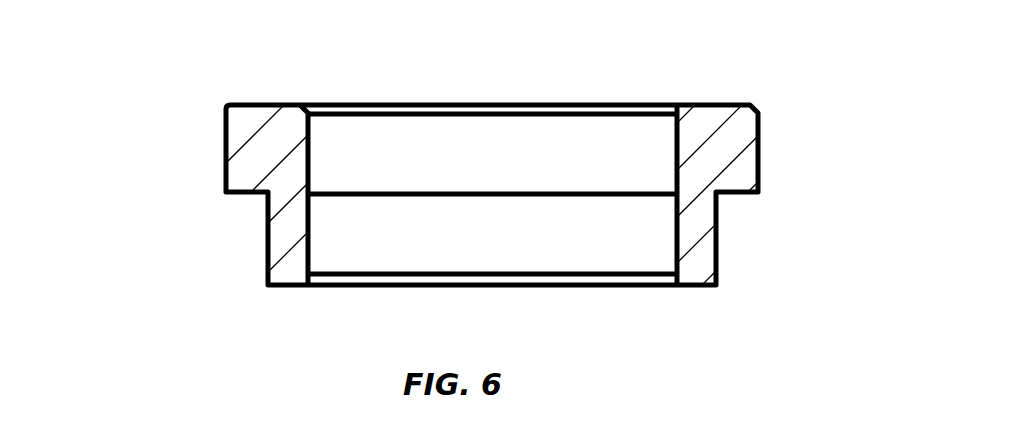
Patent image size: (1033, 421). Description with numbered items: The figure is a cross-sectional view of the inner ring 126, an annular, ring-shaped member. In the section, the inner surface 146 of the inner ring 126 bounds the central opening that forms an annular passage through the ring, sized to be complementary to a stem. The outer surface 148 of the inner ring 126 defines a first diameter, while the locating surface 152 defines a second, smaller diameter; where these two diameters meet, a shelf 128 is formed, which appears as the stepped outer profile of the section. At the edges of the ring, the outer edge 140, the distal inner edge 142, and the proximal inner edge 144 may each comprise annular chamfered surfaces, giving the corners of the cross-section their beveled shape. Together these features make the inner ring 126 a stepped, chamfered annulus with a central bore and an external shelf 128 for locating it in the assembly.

The inner ring 126 is at (845, 118).
The shelf 128 is at (746, 195).
The outer edge 140 is at (227, 110).
The distal inner edge 142 is at (312, 105).
The proximal inner edge 144 is at (335, 275).
The inner surface 146 is at (589, 153).
The outer surface 148 is at (224, 155).
The locating surface 152 is at (717, 240).